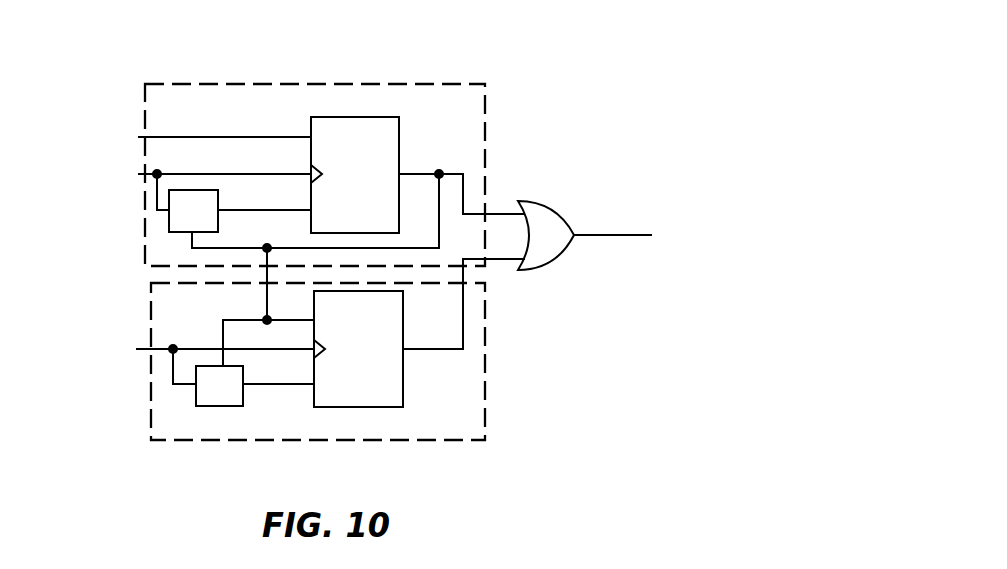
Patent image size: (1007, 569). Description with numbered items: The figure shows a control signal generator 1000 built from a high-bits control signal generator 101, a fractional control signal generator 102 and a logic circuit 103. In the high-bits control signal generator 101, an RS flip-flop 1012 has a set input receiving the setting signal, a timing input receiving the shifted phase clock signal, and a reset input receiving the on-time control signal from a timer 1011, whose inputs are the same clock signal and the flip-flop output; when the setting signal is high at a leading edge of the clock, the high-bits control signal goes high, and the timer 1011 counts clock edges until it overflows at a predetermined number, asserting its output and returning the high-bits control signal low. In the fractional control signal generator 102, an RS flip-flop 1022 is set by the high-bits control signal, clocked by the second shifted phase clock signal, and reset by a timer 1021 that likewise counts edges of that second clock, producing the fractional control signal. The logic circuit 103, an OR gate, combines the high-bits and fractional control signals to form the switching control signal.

The control signal generator 1000 is at (375, 248).
The high-bits control signal generator 101 is at (485, 84).
The fractional control signal generator 102 is at (485, 440).
The logic circuit 103 is at (570, 250).
The timer 1011 is at (218, 232).
The RS flip-flop 1012 is at (399, 117).
The timer 1021 is at (243, 406).
The RS flip-flop 1022 is at (403, 407).